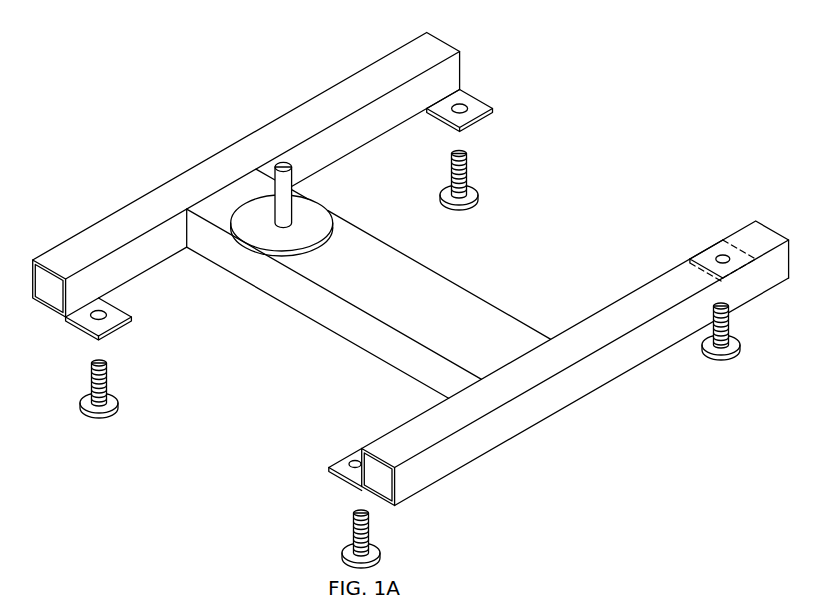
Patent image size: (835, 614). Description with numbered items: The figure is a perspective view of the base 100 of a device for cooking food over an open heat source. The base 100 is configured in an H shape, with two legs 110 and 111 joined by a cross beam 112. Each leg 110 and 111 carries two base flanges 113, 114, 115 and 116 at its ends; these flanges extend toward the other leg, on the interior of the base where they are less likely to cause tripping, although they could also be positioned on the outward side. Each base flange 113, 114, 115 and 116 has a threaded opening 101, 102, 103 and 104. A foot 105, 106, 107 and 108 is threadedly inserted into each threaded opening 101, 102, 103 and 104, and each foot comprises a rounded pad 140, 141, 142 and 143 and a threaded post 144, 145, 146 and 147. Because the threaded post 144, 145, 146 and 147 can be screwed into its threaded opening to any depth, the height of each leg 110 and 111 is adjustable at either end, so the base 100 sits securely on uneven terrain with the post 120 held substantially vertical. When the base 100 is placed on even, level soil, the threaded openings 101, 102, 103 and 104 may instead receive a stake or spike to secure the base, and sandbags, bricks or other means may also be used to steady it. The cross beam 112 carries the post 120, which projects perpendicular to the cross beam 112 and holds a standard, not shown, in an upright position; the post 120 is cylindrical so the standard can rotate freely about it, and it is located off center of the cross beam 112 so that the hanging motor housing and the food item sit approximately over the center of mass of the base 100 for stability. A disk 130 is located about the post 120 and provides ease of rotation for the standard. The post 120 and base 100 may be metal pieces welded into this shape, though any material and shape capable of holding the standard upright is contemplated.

The base 100 is at (554, 50).
The threaded opening 101 is at (101, 313).
The threaded opening 102 is at (460, 106).
The threaded opening 103 is at (722, 254).
The threaded opening 104 is at (352, 462).
The foot 105 is at (77, 376).
The foot 106 is at (479, 168).
The foot 107 is at (756, 342).
The foot 108 is at (396, 534).
The leg 110 is at (120, 224).
The leg 111 is at (517, 408).
The cross beam 112 is at (483, 322).
The base flange 113 is at (132, 318).
The base flange 114 is at (478, 113).
The base flange 115 is at (695, 255).
The base flange 116 is at (354, 457).
The post 120 is at (291, 172).
The disk 130 is at (318, 212).
The rounded pad 140 is at (99, 420).
The rounded pad 141 is at (459, 210).
The rounded pad 142 is at (725, 360).
The rounded pad 143 is at (378, 562).
The threaded post 144 is at (107, 378).
The threaded post 145 is at (452, 174).
The threaded post 146 is at (730, 320).
The threaded post 147 is at (353, 520).